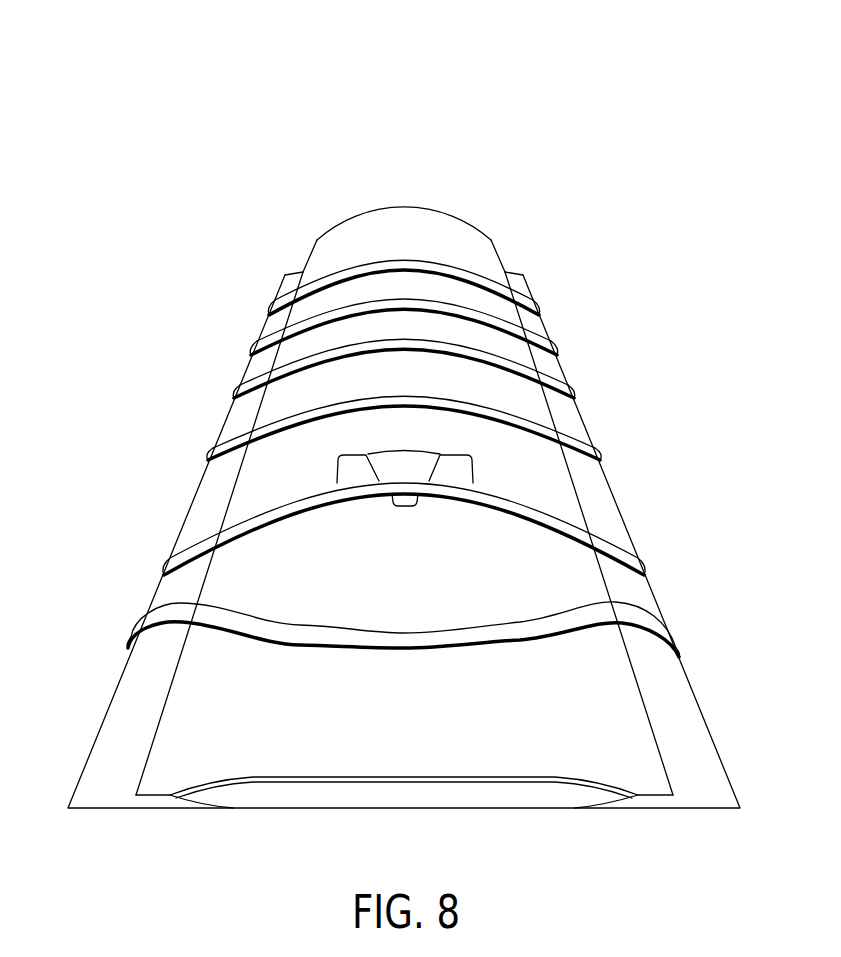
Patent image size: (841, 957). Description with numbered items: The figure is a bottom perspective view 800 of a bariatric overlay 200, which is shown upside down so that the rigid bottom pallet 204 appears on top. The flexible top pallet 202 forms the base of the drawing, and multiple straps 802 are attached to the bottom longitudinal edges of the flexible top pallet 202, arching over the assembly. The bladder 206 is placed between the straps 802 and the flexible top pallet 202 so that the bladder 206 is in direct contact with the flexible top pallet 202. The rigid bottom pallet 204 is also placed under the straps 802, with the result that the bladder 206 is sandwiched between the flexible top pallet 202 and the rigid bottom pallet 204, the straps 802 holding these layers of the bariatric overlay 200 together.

The bottom perspective view 800 is at (400, 417).
The bariatric overlay 200 is at (400, 507).
The flexible top pallet 202 is at (120, 733).
The rigid bottom pallet 204 is at (494, 253).
The bladder 206 is at (613, 702).
The straps 802 is at (282, 307).